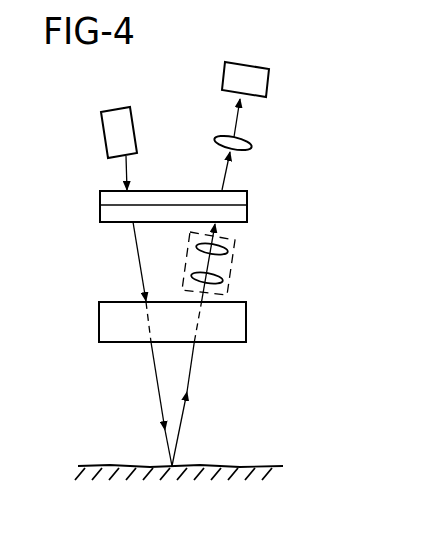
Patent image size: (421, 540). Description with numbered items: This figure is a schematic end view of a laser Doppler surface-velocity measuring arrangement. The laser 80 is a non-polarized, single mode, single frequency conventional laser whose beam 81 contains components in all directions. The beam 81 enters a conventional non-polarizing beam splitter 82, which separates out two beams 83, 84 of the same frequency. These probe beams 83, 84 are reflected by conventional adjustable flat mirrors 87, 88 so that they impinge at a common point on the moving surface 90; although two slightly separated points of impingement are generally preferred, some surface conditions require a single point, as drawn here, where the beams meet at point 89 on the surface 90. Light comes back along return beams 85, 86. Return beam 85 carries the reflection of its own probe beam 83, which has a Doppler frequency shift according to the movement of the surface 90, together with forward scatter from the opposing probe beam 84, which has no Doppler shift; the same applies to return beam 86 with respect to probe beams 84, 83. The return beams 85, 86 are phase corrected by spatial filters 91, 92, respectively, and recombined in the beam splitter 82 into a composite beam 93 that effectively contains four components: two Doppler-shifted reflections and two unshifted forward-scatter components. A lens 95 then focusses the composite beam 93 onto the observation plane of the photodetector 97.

The laser 80 is at (137, 137).
The beam 81 is at (122, 169).
The non-polarizing beam splitter 82 is at (247, 212).
The probe beam 83 is at (108, 344).
The probe beam 84 is at (138, 257).
The return beam 85 is at (230, 345).
The return beam 86 is at (190, 373).
The adjustable flat mirror 87 is at (212, 322).
The adjustable flat mirror 88 is at (247, 327).
The focal point 89 is at (170, 464).
The moving surface 90 is at (245, 466).
The spatial filter 91 is at (249, 263).
The spatial filter 92 is at (235, 258).
The composite beam 93 is at (227, 178).
The lens 95 is at (246, 139).
The photodetector 97 is at (267, 86).